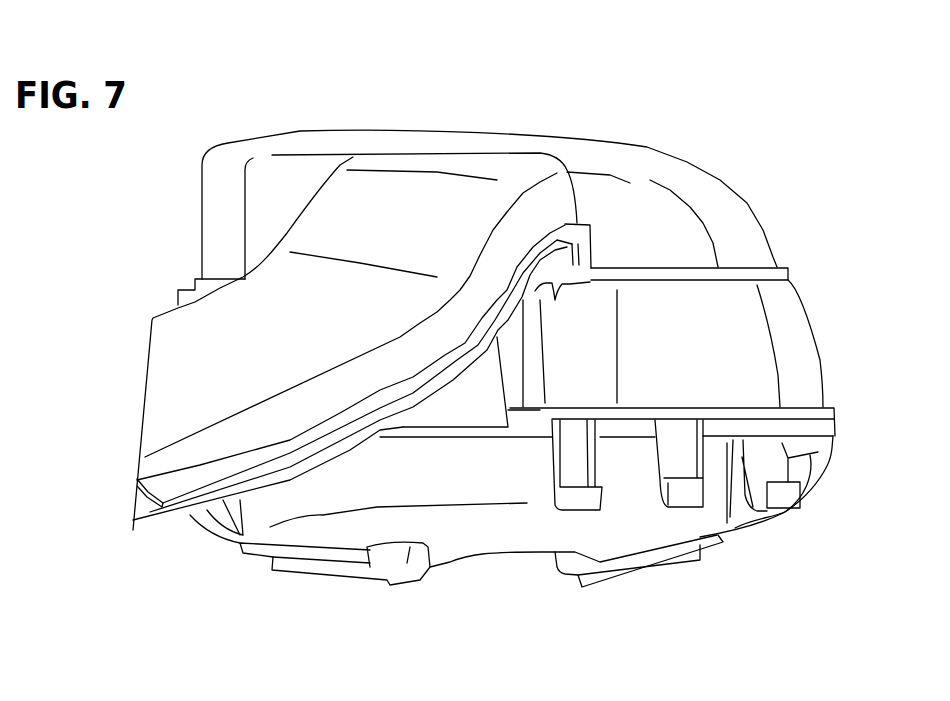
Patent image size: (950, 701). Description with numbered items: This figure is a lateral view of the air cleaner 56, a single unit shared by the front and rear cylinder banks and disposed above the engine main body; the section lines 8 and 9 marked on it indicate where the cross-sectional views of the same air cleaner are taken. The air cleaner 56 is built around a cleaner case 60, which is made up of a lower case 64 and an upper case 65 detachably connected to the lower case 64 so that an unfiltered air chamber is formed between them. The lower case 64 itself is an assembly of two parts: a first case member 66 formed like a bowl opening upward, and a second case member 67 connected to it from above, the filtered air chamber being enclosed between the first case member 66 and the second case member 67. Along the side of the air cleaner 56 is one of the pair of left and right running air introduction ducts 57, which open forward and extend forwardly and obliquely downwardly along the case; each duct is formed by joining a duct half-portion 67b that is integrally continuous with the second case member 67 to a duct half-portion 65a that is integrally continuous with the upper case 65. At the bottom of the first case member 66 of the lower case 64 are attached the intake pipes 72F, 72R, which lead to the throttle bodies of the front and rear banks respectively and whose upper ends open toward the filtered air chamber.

The section line 8 is at (543, 108).
The section line 9 is at (485, 113).
The air cleaner 56 is at (660, 141).
The running air introduction duct 57 is at (352, 457).
The cleaner case 60 is at (772, 530).
The lower case 64 is at (713, 402).
The upper case 65 is at (737, 208).
The duct half-portion 65a is at (258, 437).
The first case member 66 is at (785, 443).
The second case member 67 is at (790, 310).
The duct half-portion 67b is at (307, 463).
The intake pipe 72F is at (377, 588).
The intake pipe 72R is at (630, 578).